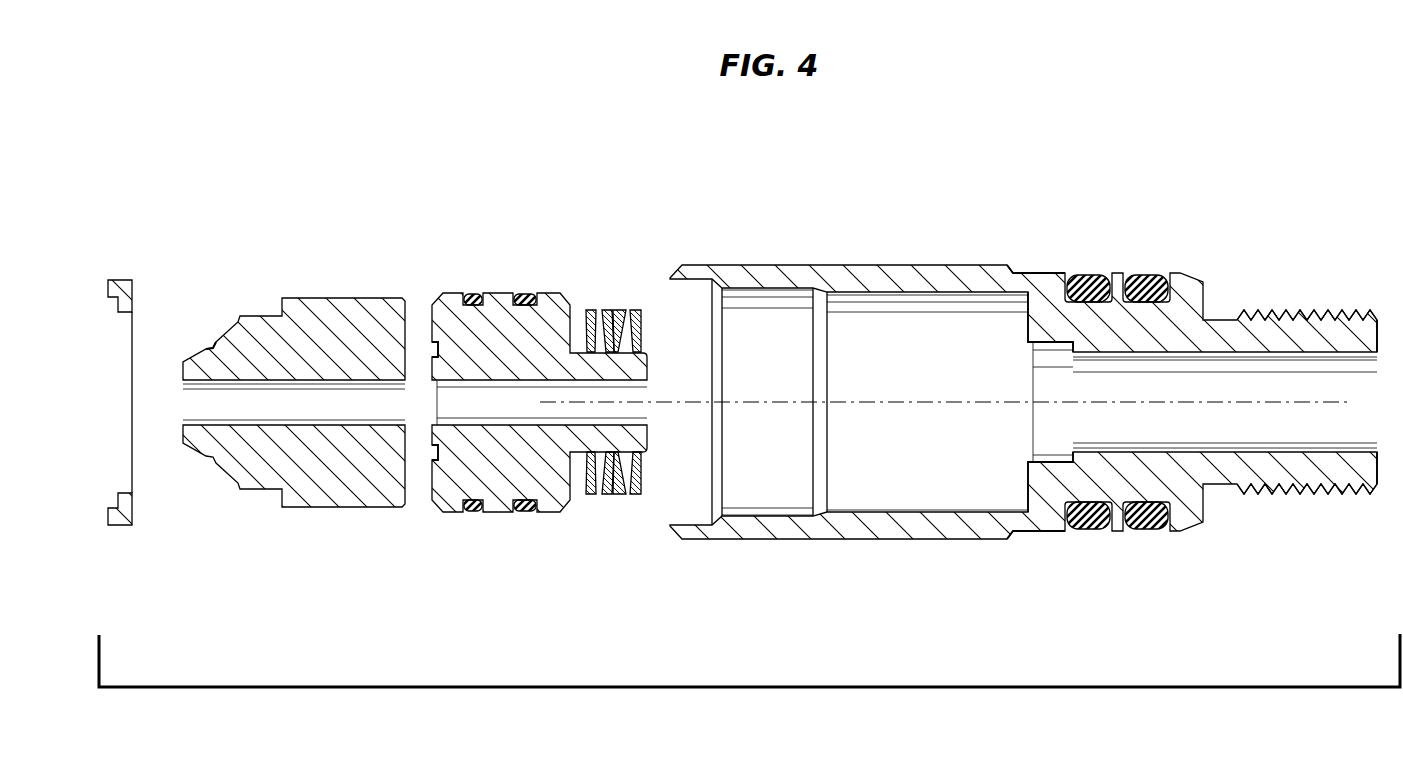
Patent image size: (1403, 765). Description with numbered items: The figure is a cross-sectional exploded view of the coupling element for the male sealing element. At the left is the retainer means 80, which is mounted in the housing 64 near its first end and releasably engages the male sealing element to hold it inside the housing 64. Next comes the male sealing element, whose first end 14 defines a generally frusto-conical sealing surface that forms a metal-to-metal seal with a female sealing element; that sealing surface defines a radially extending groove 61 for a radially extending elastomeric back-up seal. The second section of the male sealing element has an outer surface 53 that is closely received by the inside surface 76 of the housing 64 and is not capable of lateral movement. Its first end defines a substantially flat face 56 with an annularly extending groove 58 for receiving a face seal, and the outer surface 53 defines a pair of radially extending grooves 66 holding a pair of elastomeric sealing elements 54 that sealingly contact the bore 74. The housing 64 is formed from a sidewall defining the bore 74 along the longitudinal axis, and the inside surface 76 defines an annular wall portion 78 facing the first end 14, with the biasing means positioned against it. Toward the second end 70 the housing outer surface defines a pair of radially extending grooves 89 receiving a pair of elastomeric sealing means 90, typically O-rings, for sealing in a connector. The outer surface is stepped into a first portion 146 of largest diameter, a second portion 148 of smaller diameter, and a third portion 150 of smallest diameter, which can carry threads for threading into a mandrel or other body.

The first end 14 is at (181, 364).
The outer surface 53 is at (546, 513).
The elastomeric sealing elements 54 is at (473, 513).
The substantially flat face 56 is at (432, 472).
The annularly extending groove 58 is at (432, 348).
The radially extending groove 61 is at (212, 342).
The housing 64 is at (957, 539).
The radially extending grooves 66 is at (525, 298).
The second end 70 is at (1378, 310).
The bore 74 is at (935, 352).
The inside surface 76 is at (895, 300).
The annular wall portion 78 is at (1018, 305).
The retainer means 80 is at (120, 280).
The radially extending grooves 89 is at (1168, 280).
The elastomeric sealing means 90 is at (1146, 528).
The first portion 146 is at (828, 539).
The second portion 148 is at (1048, 531).
The third portion 150 is at (1321, 504).